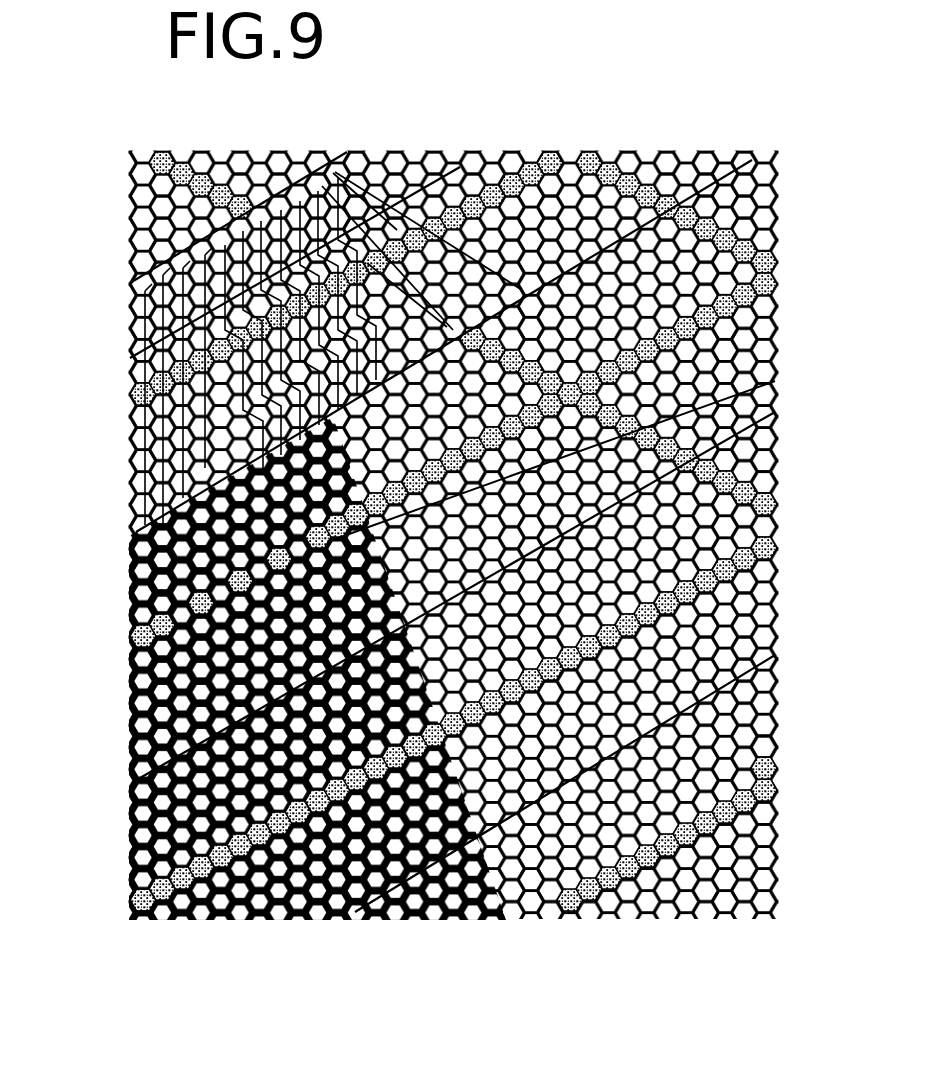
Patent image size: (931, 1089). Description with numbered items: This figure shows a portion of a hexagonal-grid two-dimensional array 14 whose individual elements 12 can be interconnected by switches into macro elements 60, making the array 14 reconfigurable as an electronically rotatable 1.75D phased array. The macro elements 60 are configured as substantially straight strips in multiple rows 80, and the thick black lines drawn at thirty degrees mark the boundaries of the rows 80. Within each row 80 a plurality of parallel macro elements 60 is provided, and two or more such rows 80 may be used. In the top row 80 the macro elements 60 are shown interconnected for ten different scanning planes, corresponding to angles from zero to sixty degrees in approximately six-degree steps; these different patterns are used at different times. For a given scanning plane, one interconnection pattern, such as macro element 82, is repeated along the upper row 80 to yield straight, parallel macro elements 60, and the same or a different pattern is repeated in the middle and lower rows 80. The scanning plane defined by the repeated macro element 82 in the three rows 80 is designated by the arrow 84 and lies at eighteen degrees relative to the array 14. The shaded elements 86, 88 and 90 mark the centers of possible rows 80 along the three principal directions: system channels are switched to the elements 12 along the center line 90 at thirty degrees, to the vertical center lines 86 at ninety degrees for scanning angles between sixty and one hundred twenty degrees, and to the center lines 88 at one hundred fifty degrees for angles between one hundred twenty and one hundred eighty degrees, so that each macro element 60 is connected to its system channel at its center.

The elements 12 is at (752, 131).
The two-dimensional array 14 is at (596, 128).
The macro elements 60 is at (340, 915).
The rows 80 is at (780, 726).
The macro element 82 is at (133, 783).
The arrow 84 is at (750, 400).
The center lines 86 is at (551, 150).
The center lines 88 is at (780, 782).
The center line 90 is at (141, 915).